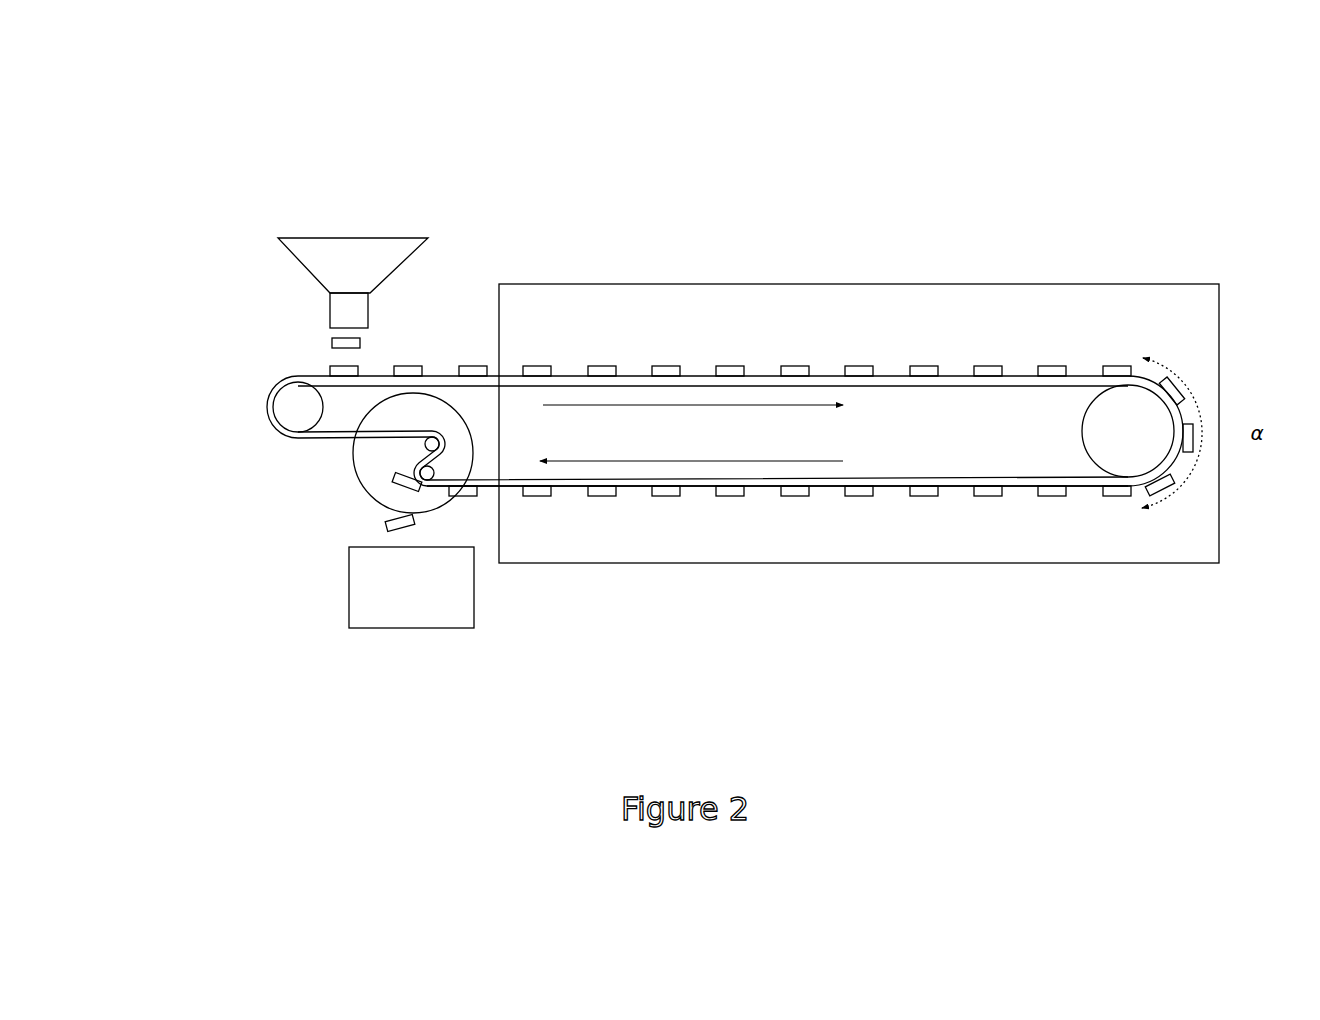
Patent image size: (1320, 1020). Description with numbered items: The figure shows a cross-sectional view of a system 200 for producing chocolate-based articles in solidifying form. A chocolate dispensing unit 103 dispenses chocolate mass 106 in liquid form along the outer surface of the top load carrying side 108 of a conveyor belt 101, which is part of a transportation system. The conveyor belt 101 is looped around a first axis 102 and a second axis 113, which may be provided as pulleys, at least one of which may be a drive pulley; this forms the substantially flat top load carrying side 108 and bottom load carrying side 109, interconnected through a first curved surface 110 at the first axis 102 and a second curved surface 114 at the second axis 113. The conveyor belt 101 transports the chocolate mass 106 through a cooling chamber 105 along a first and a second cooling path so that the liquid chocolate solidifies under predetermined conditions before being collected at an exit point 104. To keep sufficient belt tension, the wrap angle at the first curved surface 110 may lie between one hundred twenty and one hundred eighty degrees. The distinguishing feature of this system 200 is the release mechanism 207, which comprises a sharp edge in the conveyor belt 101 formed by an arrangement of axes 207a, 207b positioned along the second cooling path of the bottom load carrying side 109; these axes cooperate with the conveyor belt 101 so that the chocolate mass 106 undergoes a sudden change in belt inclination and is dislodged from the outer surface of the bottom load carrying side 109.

The system 200 is at (1082, 123).
The conveyor belt 101 is at (1077, 380).
The first axis 102 is at (1125, 440).
The chocolate dispensing unit 103 is at (363, 260).
The exit point 104 is at (430, 593).
The cooling chamber 105 is at (618, 302).
The chocolate mass 106 is at (910, 358).
The top load carrying side 108 is at (693, 370).
The bottom load carrying side 109 is at (817, 490).
The first curved surface 110 is at (1185, 415).
The second axis 113 is at (293, 427).
The second curved surface 114 is at (263, 398).
The release mechanism 207 is at (378, 485).
The axis of the release mechanism 207a is at (434, 437).
The axis of the release mechanism 207b is at (432, 478).